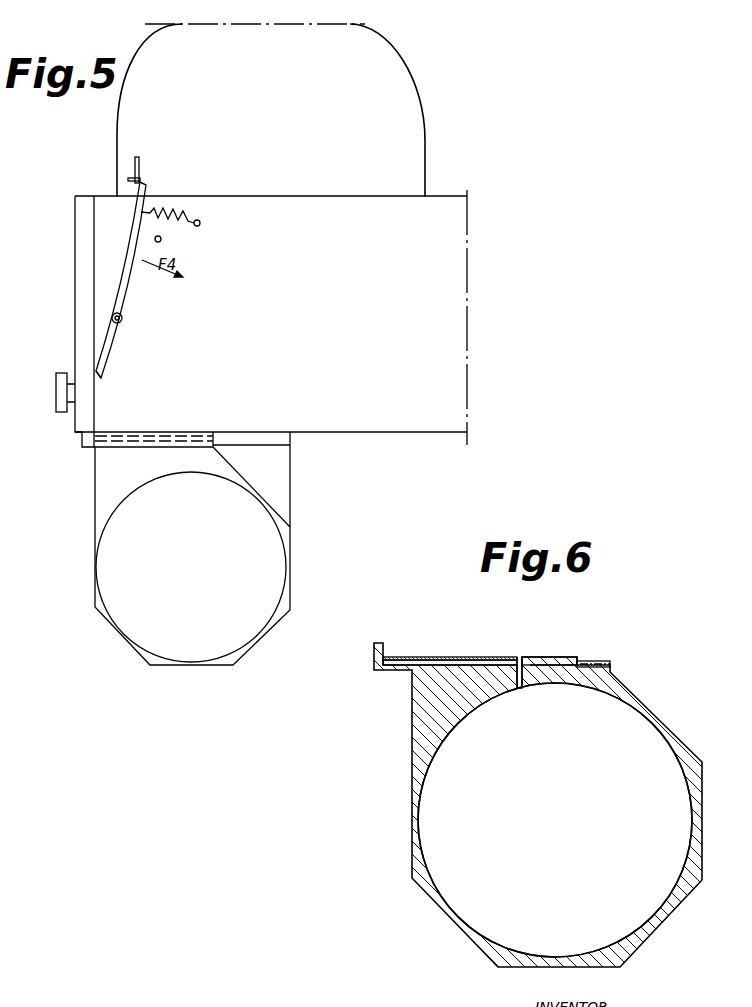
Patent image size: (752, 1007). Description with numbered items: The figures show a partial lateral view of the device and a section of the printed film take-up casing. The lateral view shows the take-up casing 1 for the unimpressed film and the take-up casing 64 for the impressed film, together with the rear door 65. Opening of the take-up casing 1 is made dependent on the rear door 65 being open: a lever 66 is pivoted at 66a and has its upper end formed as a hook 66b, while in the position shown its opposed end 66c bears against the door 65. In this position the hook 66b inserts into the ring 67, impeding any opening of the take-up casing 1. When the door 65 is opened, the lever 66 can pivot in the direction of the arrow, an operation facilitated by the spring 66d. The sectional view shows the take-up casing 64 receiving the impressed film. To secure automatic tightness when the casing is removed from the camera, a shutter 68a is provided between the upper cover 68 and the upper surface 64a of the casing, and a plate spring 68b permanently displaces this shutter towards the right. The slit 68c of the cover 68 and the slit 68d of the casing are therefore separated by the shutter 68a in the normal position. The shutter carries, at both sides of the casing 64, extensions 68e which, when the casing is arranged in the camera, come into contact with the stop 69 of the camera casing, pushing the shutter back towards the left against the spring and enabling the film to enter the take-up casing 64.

In FIG. 5, the take-up casing for unimpressed film 1 is at (408, 118).
In FIG. 5, the rear door 65 is at (82, 294).
In FIG. 5, the stop 69 is at (255, 438).
In FIG. 5, the take-up casing for impressed film 64 is at (120, 614).
In FIG. 6, the take-up casing for impressed film 64 is at (647, 908).
In FIG. 5, the lever 66 is at (127, 286).
In FIG. 5, the pivot 66a is at (123, 318).
In FIG. 5, the hook 66b is at (146, 182).
In FIG. 5, the opposed end of the lever 66c is at (103, 362).
In FIG. 5, the spring 66d is at (177, 222).
In FIG. 5, the ring 67 is at (138, 165).
In FIG. 6, the upper surface of the casing 64a is at (498, 672).
In FIG. 6, the upper cover 68 is at (483, 657).
In FIG. 6, the shutter 68a is at (523, 657).
In FIG. 6, the plate spring 68b is at (420, 657).
In FIG. 6, the slit of the cover 68c is at (530, 670).
In FIG. 6, the slit of the casing 68d is at (519, 690).
In FIG. 6, the extensions 68e is at (597, 662).